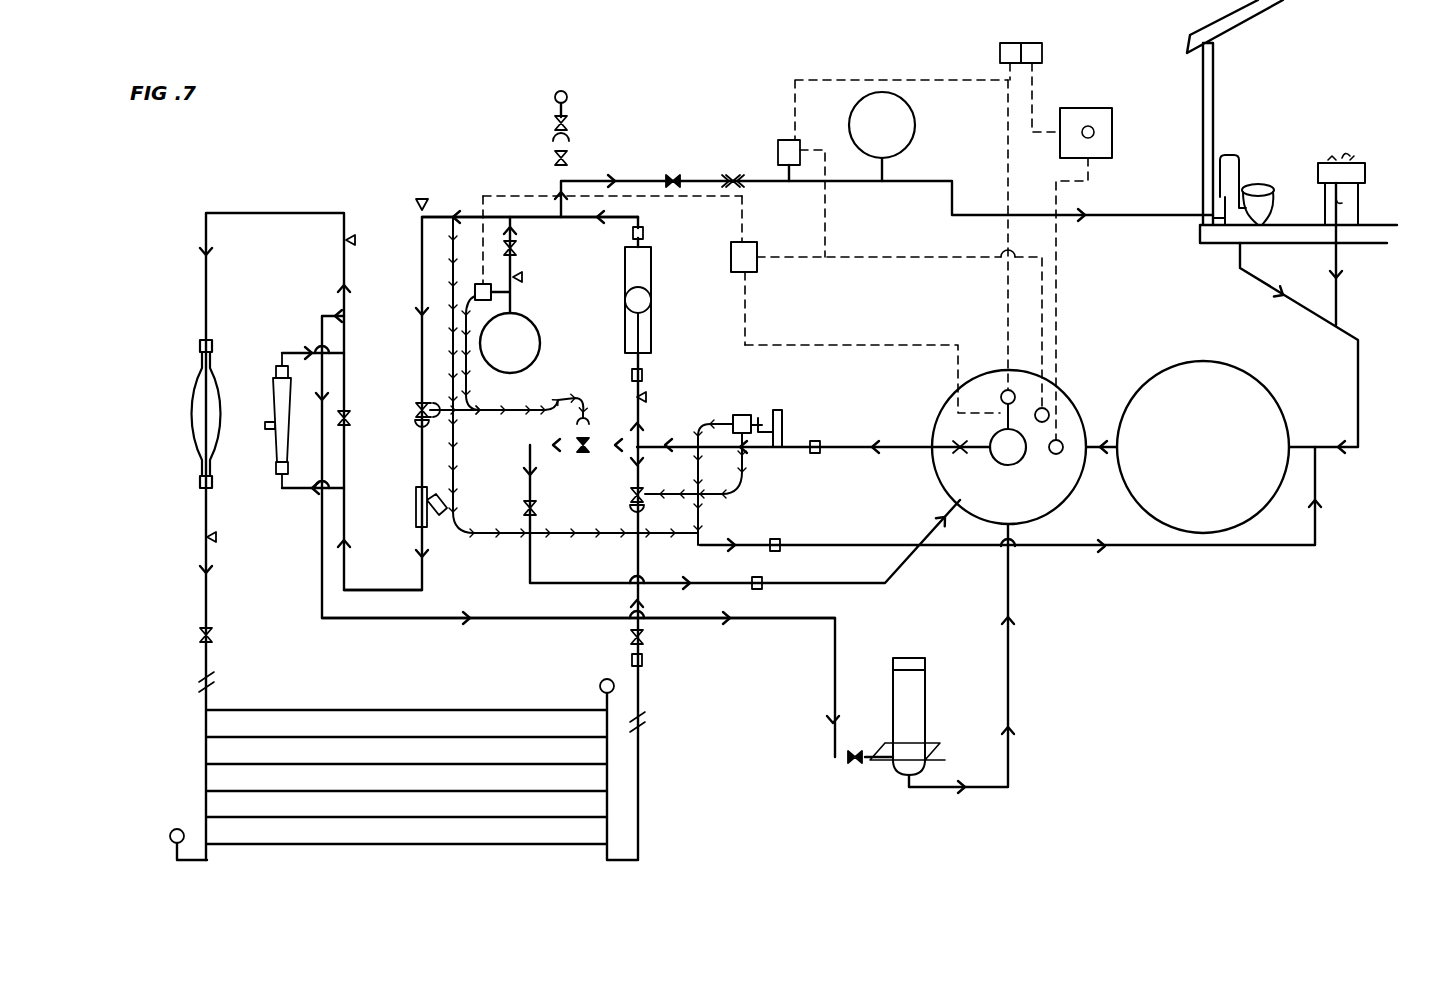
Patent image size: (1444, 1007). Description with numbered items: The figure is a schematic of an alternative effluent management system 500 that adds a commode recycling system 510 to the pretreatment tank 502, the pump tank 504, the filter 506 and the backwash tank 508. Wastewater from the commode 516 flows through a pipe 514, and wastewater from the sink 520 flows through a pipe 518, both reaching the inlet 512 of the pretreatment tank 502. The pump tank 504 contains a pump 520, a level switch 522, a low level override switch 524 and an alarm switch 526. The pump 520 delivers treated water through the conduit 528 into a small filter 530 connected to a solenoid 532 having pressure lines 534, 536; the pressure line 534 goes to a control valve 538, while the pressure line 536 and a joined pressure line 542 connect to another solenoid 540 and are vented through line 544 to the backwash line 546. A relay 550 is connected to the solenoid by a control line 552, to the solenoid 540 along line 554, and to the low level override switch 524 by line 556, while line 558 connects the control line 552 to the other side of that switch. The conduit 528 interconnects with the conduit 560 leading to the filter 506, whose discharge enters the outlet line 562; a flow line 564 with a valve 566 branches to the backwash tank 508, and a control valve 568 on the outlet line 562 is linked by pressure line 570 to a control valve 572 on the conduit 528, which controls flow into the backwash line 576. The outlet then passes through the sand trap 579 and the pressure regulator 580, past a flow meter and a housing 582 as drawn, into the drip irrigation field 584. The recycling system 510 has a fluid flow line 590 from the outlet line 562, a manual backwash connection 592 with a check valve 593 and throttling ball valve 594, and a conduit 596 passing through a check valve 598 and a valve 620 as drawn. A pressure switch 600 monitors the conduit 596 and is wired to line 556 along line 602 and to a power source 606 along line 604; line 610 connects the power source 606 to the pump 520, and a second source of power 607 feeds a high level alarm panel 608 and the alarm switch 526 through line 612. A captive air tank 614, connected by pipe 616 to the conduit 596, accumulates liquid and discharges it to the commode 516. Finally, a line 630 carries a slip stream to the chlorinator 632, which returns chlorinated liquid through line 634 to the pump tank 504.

The effluent management system 500 is at (1095, 55).
The pretreatment tank 502 is at (1187, 367).
The pump tank 504 is at (946, 468).
The filter 506 is at (653, 285).
The backwash tank 508 is at (532, 352).
The commode recycling system 510 is at (782, 104).
The inlet 512 is at (1300, 445).
The pipe 514 is at (1262, 292).
The commode 516 is at (1240, 160).
The pipe 518 is at (1338, 312).
The sink 520 is at (1360, 170).
The level switch 522 is at (1004, 390).
The low level override switch 524 is at (1047, 409).
The alarm switch 526 is at (1060, 455).
The conduit 528 is at (852, 447).
The small filter 530 is at (786, 430).
The solenoid 532 is at (749, 418).
The pressure line 534 is at (745, 482).
The pressure line 536 is at (722, 424).
The control valve 538 is at (630, 498).
The solenoid 540 is at (481, 283).
The pressure line 542 is at (505, 535).
The line 544 is at (702, 545).
The backwash line 546 is at (842, 545).
The relay 550 is at (758, 240).
The control line 552 is at (748, 325).
The line 554 is at (547, 195).
The line 556 is at (872, 260).
The line 558 is at (846, 345).
The conduit 560 is at (645, 387).
The outlet line 562 is at (545, 220).
The flow line 564 is at (515, 242).
The valve 566 is at (520, 280).
The control valve 568 is at (418, 403).
The pressure line 570 is at (503, 410).
The control valve 572 is at (585, 455).
The backwash line 576 is at (545, 584).
The sand trap 579 is at (417, 497).
The pressure regulator 580 is at (351, 423).
The filter housing 582 is at (202, 420).
The drip irrigation field 584 is at (425, 850).
The fluid flow line 590 is at (555, 205).
The manual backwash connection 592 is at (567, 113).
The check valve 593 is at (553, 130).
The throttling ball valve 594 is at (567, 165).
The conduit 596 is at (630, 180).
The check valve 598 is at (733, 175).
The pressure switch 600 is at (797, 140).
The line 602 is at (832, 238).
The line 604 is at (940, 79).
The power source 606 is at (1005, 42).
The source of power 607 is at (1040, 42).
The high level alarm panel 608 is at (1105, 118).
The line 610 is at (1005, 145).
The line 612 is at (1035, 110).
The captive air tank 614 is at (902, 118).
The pipe 616 is at (885, 178).
The valve 620 is at (673, 188).
The line 630 is at (410, 622).
The chlorinator 632 is at (915, 700).
The line 634 is at (1010, 672).